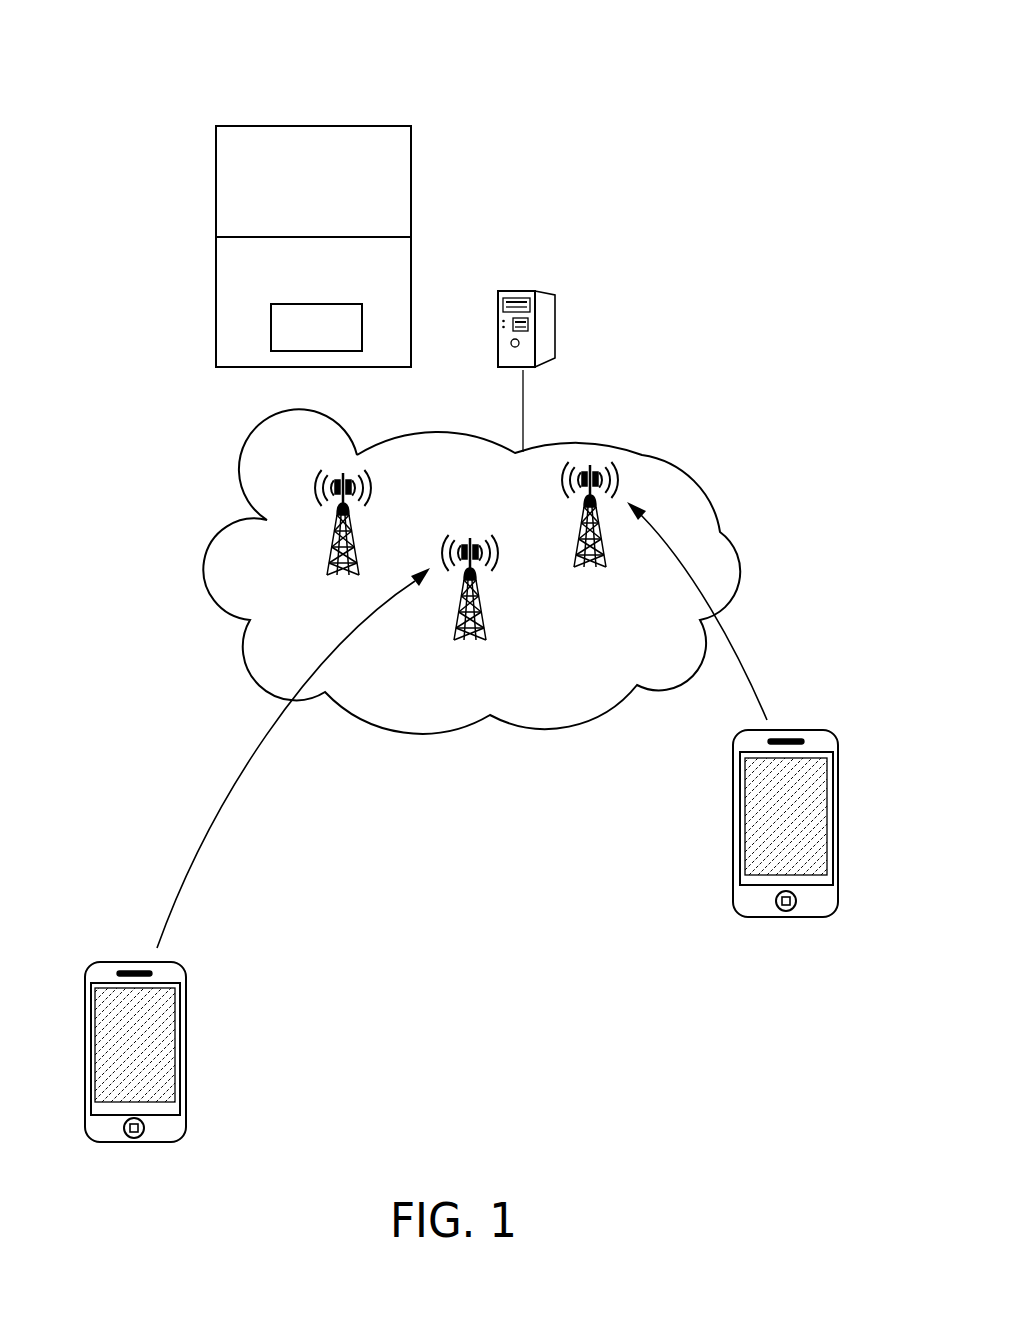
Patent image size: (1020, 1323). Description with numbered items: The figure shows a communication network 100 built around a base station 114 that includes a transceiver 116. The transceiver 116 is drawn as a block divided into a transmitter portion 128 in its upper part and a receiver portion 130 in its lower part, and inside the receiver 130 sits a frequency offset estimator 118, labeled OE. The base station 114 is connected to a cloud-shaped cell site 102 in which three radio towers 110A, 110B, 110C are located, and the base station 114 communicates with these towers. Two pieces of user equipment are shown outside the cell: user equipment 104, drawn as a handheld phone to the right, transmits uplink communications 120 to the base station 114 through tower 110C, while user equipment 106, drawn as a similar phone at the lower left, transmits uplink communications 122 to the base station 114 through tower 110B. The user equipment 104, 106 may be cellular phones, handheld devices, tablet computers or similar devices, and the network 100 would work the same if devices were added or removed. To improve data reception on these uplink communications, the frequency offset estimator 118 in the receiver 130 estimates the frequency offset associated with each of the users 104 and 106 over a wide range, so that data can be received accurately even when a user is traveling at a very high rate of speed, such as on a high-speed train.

The communication network 100 is at (128, 24).
The cell site 102 is at (640, 455).
The user equipment 104 is at (839, 857).
The user equipment 106 is at (187, 1085).
The radio tower 110A is at (330, 575).
The radio tower 110B is at (478, 643).
The radio tower 110C is at (605, 562).
The base station 114 is at (523, 289).
The transceiver 116 is at (412, 145).
The frequency offset estimator 118 is at (270, 332).
The uplink communications 120 is at (742, 676).
The uplink communications 122 is at (238, 753).
The transmitter portion 128 is at (217, 175).
The receiver portion 130 is at (217, 262).